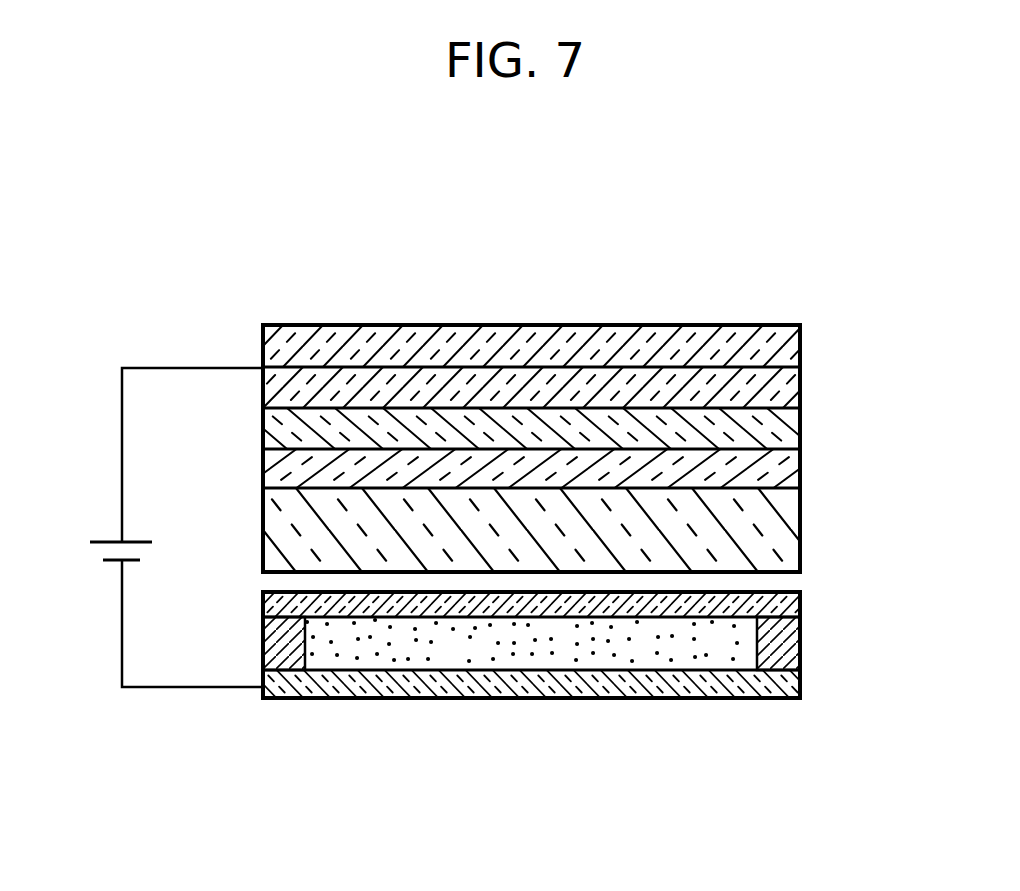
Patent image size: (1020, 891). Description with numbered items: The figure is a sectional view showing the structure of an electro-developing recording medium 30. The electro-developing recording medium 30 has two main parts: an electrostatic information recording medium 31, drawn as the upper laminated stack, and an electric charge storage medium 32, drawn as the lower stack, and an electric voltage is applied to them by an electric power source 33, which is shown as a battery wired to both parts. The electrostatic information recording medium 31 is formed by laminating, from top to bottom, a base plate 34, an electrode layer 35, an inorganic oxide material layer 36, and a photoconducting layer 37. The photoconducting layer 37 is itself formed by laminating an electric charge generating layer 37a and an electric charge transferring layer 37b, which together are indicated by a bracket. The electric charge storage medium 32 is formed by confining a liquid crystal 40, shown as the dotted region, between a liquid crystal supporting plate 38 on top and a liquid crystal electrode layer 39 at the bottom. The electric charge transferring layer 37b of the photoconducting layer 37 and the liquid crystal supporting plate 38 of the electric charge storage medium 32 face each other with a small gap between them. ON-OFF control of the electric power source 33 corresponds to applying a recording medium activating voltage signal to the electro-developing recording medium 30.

The electro-developing recording medium 30 is at (175, 710).
The electrostatic information recording medium 31 is at (365, 308).
The electric charge storage medium 32 is at (400, 718).
The electric power source 33 is at (102, 530).
The base plate 34 is at (675, 333).
The electrode layer 35 is at (802, 369).
The inorganic oxide material layer 36 is at (802, 425).
The photoconducting layer 37 is at (521, 498).
The electric charge generating layer 37a is at (263, 468).
The electric charge transferring layer 37b is at (263, 530).
The liquid crystal supporting plate 38 is at (802, 598).
The liquid crystal electrode layer 39 is at (647, 698).
The liquid crystal 40 is at (543, 642).